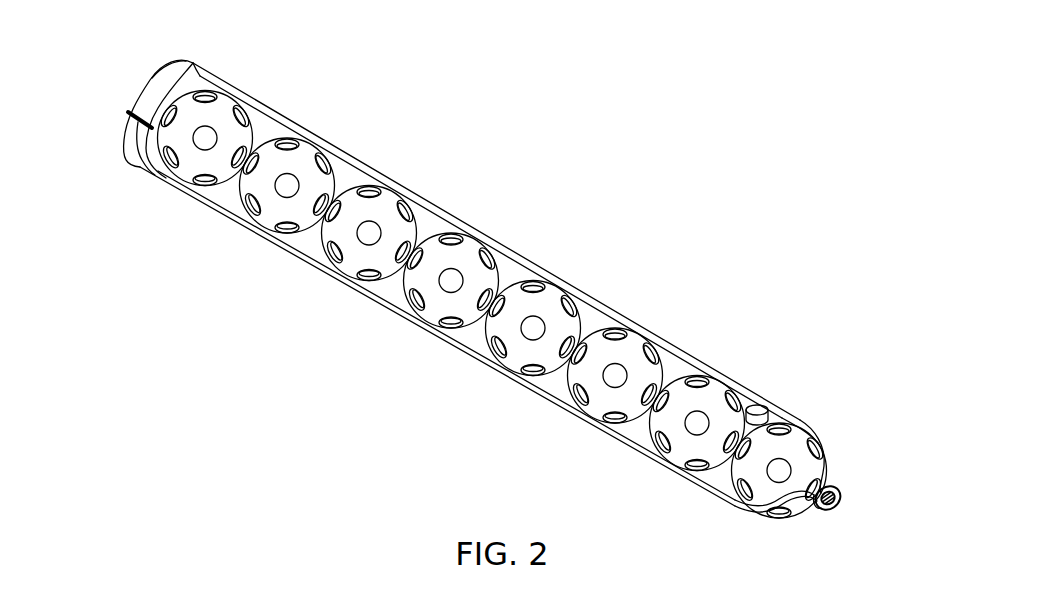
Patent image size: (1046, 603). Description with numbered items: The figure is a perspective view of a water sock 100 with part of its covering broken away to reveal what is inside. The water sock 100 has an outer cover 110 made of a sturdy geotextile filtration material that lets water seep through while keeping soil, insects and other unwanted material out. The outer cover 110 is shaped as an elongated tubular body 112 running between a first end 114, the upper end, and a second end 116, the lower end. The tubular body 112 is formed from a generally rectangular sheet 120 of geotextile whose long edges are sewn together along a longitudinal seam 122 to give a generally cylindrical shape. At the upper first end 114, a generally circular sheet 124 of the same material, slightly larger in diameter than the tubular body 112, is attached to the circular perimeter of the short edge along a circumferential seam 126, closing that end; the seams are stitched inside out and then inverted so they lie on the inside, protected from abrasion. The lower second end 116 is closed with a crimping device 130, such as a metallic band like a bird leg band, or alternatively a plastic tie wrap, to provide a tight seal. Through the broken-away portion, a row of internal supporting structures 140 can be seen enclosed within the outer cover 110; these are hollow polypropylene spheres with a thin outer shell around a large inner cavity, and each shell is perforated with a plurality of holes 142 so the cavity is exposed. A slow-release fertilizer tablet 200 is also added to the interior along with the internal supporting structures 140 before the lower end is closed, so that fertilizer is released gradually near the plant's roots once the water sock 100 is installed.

The water sock 100 is at (521, 212).
The outer cover 110 is at (238, 88).
The tubular body 112 is at (812, 445).
The first end 114 is at (142, 88).
The second end 116 is at (845, 509).
The rectangular sheet 120 is at (185, 77).
The longitudinal seam 122 is at (131, 112).
The circular sheet 124 is at (163, 162).
The circumferential seam 126 is at (173, 62).
The crimping device 130 is at (818, 510).
The internal supporting structures 140 is at (239, 137).
The holes 142 is at (208, 141).
The fertilizer tablet 200 is at (756, 405).